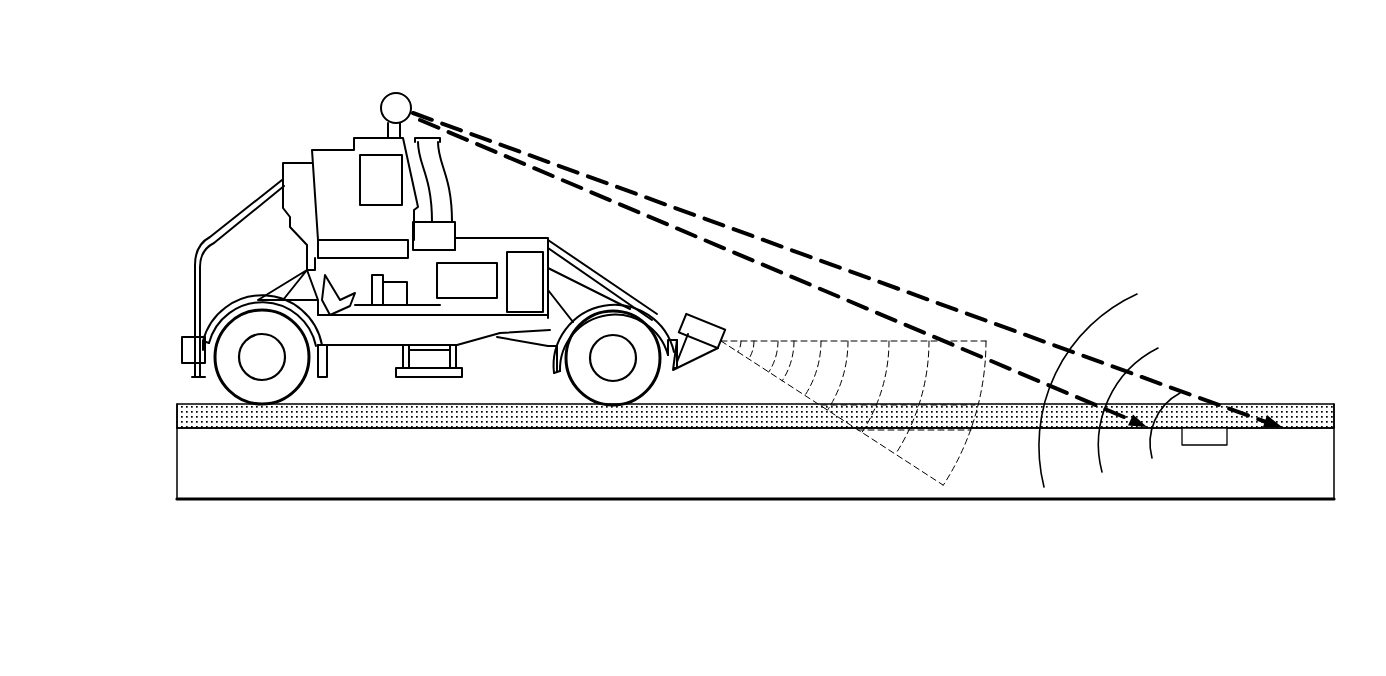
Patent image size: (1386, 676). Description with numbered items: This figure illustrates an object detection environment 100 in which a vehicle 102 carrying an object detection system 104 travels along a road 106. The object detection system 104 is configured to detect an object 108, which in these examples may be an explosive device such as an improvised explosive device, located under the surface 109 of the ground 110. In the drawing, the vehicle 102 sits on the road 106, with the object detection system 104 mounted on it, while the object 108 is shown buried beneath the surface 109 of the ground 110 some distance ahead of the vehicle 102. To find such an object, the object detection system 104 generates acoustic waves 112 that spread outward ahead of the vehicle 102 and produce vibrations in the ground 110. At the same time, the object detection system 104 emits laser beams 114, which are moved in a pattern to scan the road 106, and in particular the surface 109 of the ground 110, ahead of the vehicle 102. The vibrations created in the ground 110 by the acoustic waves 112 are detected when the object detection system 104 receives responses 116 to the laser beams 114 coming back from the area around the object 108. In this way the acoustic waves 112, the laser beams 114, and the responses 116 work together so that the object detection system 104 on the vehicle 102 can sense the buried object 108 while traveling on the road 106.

The object detection environment 100 is at (935, 135).
The vehicle 102 is at (328, 143).
The object detection system 104 is at (388, 88).
The road 106 is at (710, 423).
The object 108 is at (1208, 440).
The surface 109 is at (1306, 409).
The ground 110 is at (555, 490).
The acoustic waves 112 is at (763, 328).
The laser beams 114 is at (672, 190).
The responses 116 is at (1060, 300).